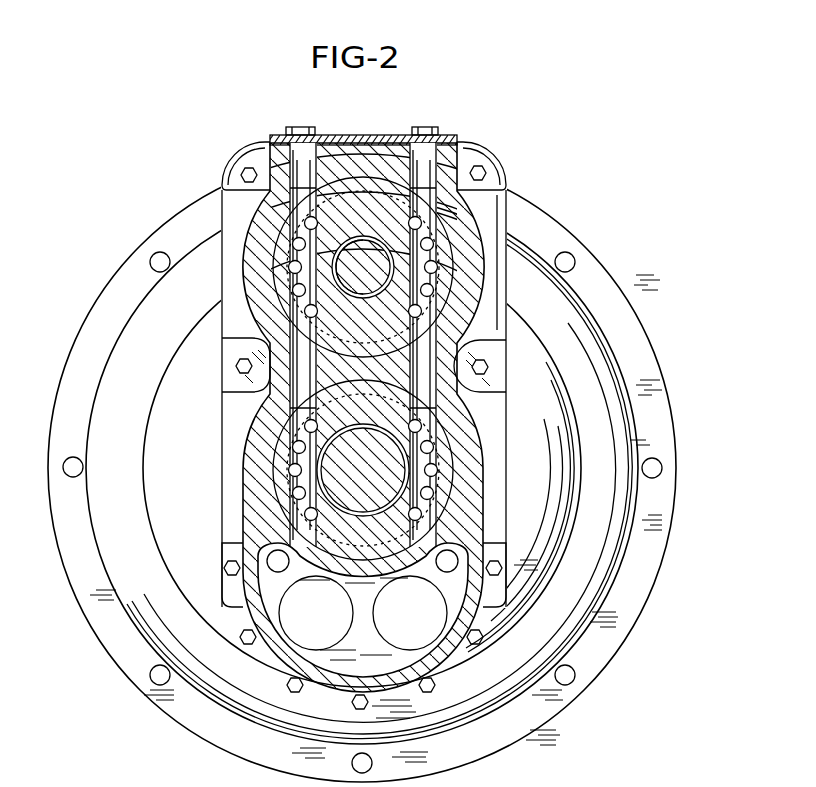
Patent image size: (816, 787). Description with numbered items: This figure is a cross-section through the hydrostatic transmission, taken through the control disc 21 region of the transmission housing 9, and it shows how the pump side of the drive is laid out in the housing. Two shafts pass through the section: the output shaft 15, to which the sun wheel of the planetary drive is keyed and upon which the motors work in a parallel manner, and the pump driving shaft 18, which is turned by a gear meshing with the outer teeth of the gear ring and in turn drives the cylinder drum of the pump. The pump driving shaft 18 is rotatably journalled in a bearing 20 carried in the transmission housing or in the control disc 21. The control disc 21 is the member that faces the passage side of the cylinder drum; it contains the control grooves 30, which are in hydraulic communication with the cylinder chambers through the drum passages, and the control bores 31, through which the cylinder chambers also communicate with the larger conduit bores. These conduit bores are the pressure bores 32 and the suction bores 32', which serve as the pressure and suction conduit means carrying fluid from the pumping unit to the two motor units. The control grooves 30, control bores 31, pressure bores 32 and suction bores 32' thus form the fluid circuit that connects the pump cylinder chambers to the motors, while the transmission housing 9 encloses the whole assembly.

The transmission housing 9 is at (590, 257).
The output shaft 15 is at (359, 440).
The pump driving shaft 18 is at (369, 287).
The bearing 20 is at (370, 238).
The control disc 21 is at (357, 183).
The control grooves 30 is at (447, 290).
The control bores 31 is at (430, 244).
The pressure bores 32 is at (484, 374).
The suction bores 32' is at (238, 374).